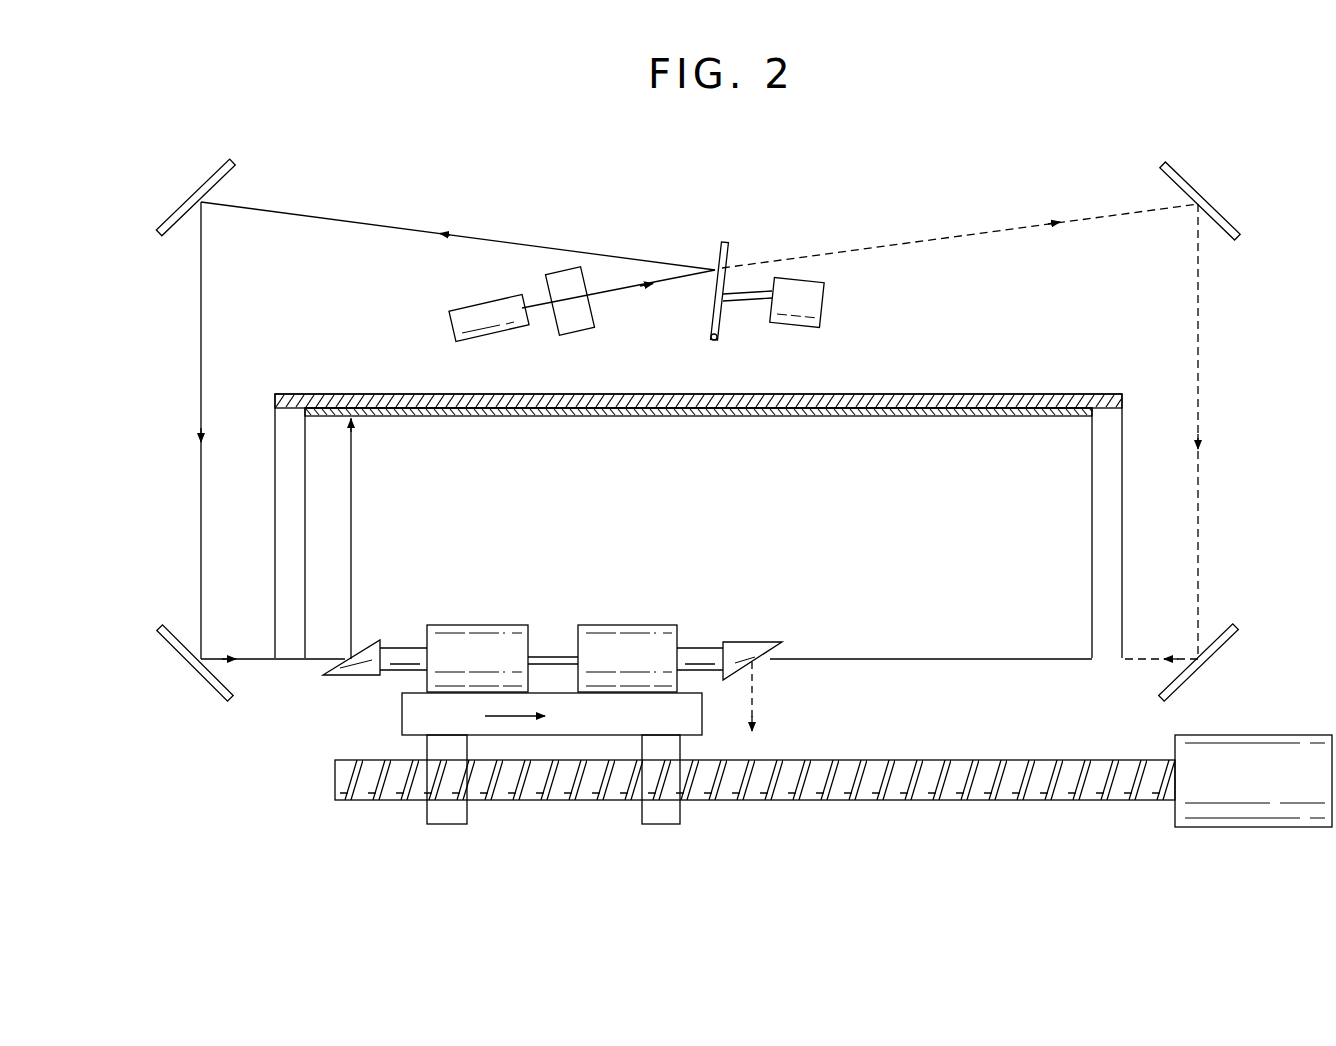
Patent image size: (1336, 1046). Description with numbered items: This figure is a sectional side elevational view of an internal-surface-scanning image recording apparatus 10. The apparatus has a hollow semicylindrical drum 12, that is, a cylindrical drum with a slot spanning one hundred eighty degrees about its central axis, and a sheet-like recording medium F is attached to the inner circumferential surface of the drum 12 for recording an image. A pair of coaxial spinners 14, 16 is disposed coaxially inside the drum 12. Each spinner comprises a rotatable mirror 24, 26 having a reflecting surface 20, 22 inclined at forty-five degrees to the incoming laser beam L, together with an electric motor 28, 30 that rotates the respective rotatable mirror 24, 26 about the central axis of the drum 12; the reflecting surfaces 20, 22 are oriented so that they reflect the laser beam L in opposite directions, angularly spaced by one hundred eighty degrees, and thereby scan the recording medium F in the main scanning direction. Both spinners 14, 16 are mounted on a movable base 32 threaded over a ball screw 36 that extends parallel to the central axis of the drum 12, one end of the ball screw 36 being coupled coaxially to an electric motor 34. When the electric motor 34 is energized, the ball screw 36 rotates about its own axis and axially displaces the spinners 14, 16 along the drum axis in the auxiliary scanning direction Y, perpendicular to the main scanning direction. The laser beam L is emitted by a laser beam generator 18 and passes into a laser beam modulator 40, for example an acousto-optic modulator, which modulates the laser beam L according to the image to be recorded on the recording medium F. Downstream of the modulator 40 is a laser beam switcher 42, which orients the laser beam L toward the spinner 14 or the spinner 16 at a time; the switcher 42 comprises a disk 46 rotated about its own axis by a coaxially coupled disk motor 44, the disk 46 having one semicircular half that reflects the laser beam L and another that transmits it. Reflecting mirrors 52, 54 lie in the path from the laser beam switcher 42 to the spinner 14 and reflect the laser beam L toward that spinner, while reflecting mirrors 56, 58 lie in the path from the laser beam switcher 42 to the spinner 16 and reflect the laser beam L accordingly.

The internal-surface-scanning image recording apparatus 10 is at (887, 146).
The hollow semicylindrical drum 12 is at (1105, 446).
The recording medium F is at (930, 450).
The laser beam L is at (372, 225).
The spinner 14 is at (458, 620).
The spinner 16 is at (614, 618).
The laser beam generator 18 is at (489, 326).
The reflecting surface 20 is at (362, 641).
The reflecting surface 22 is at (732, 682).
The rotatable mirror 24 is at (357, 677).
The rotatable mirror 26 is at (738, 656).
The electric motor 28 is at (495, 648).
The electric motor 30 is at (652, 646).
The movable base 32 is at (402, 718).
The electric motor 34 is at (1209, 750).
The ball screw 36 is at (859, 769).
The laser beam modulator 40 is at (575, 319).
The laser beam switcher 42 is at (760, 226).
The disk motor 44 is at (795, 312).
The disk 46 is at (713, 341).
The reflecting mirror 52 is at (227, 163).
The reflecting mirror 54 is at (165, 627).
The reflecting mirror 56 is at (1170, 164).
The reflecting mirror 58 is at (1233, 632).